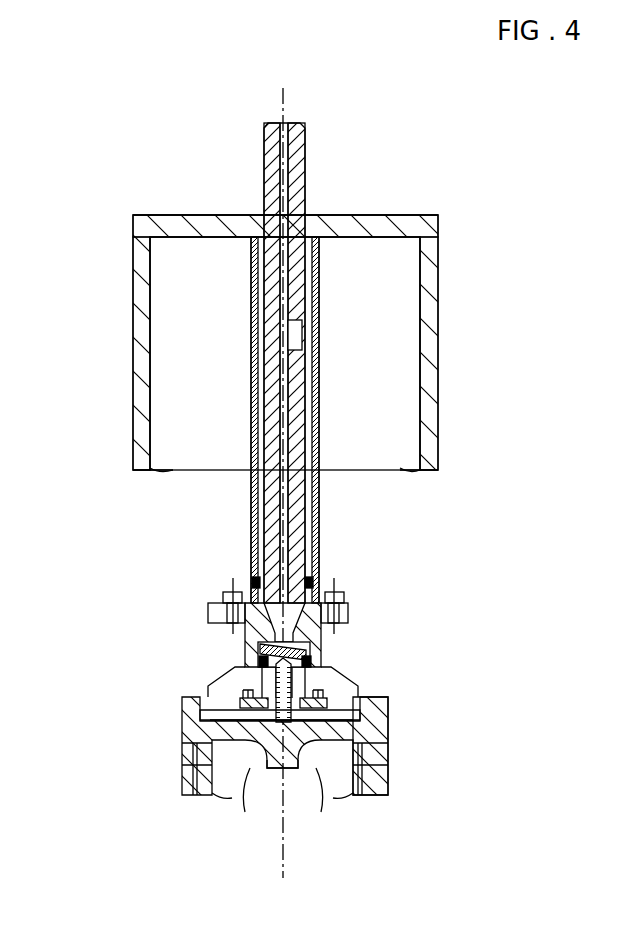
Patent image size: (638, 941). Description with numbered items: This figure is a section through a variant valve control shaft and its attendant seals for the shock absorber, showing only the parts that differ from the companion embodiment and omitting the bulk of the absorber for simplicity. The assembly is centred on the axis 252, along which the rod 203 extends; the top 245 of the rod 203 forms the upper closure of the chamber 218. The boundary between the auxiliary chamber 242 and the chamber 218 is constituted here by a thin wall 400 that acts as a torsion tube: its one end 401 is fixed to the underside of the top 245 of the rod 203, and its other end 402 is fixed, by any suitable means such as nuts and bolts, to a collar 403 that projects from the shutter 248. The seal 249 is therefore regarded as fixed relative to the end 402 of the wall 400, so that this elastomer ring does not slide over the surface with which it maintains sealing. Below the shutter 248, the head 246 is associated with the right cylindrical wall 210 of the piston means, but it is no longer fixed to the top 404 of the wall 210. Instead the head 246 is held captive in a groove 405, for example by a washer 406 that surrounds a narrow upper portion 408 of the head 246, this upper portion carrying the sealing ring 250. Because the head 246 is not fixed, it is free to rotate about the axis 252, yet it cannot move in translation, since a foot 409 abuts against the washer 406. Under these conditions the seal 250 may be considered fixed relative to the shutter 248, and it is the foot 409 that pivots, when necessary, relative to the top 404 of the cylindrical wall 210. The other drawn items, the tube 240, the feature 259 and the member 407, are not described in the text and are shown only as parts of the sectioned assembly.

The rod 203 is at (131, 380).
The right cylindrical wall 210 is at (360, 792).
The chamber 218 is at (220, 330).
The tube 240 is at (296, 136).
The auxiliary chamber 242 is at (315, 245).
The top of the rod 245 is at (178, 218).
The head 246 is at (275, 722).
The shutter 248 is at (324, 640).
The seal 249 is at (256, 580).
The sealing ring 250 is at (262, 652).
The axis 252 is at (282, 870).
The passage opening 259 is at (297, 337).
The thin wall 400 is at (321, 302).
The end of the wall 401 is at (253, 235).
The other end of the wall 402 is at (312, 582).
The collar 403 is at (345, 613).
The top of the wall 404 is at (306, 768).
The groove 405 is at (380, 745).
The washer 406 is at (372, 714).
The diaphragm 407 is at (250, 676).
The narrow upper portion 408 is at (246, 628).
The foot 409 is at (205, 714).